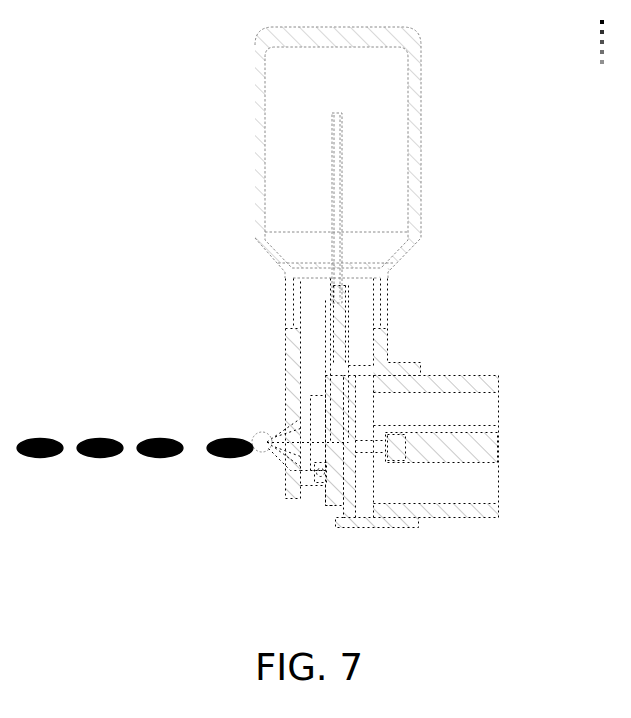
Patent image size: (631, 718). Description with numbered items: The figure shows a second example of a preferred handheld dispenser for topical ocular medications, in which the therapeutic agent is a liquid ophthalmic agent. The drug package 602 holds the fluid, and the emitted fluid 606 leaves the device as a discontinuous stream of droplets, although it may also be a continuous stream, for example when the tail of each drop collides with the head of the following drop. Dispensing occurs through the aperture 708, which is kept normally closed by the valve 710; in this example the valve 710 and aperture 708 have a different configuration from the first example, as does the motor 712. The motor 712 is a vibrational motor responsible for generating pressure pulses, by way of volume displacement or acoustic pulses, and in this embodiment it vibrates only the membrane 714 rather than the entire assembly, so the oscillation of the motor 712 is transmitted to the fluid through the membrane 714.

The drug package 602 is at (265, 74).
The emitted fluid 606 is at (160, 447).
The aperture 708 is at (268, 462).
The valve 710 is at (267, 440).
The motor 712 is at (468, 440).
The membrane 714 is at (330, 472).